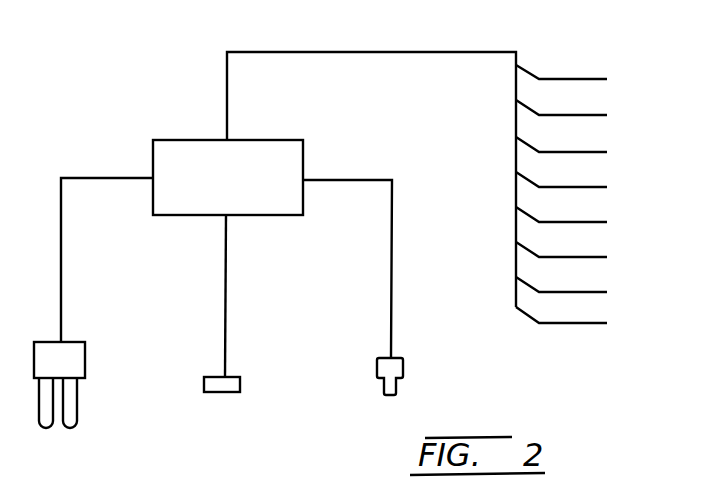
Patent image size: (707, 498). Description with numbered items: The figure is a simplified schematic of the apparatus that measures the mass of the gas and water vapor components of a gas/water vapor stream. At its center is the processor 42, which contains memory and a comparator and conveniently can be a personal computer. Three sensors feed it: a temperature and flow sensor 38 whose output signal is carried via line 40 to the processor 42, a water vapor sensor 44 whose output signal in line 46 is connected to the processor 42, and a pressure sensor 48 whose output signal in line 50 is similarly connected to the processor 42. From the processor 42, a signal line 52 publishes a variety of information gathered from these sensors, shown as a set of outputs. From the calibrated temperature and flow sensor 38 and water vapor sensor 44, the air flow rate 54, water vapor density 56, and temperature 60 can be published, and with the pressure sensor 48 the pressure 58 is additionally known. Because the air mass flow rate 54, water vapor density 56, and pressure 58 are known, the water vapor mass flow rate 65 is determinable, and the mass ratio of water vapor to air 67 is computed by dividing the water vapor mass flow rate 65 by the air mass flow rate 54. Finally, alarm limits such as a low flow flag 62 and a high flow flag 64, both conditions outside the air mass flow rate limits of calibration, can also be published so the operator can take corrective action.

The temperature and flow sensor 38 is at (85, 350).
The line 40 is at (80, 178).
The processor 42 is at (268, 140).
The water vapor sensor 44 is at (225, 392).
The line 46 is at (224, 306).
The pressure sensor 48 is at (403, 362).
The line 50 is at (368, 180).
The signal line 52 is at (380, 52).
The air flow rate 54 is at (597, 79).
The water vapor density 56 is at (597, 187).
The pressure 58 is at (597, 222).
The temperature 60 is at (597, 257).
The low flow flag 62 is at (597, 115).
The high flow flag 64 is at (597, 152).
The water vapor mass flow rate 65 is at (597, 292).
The mass ratio of water vapor to air 67 is at (597, 323).